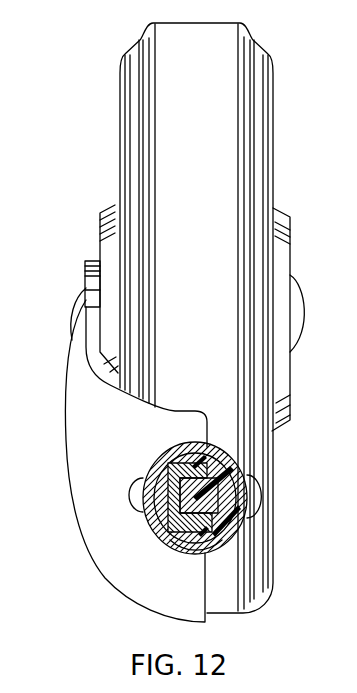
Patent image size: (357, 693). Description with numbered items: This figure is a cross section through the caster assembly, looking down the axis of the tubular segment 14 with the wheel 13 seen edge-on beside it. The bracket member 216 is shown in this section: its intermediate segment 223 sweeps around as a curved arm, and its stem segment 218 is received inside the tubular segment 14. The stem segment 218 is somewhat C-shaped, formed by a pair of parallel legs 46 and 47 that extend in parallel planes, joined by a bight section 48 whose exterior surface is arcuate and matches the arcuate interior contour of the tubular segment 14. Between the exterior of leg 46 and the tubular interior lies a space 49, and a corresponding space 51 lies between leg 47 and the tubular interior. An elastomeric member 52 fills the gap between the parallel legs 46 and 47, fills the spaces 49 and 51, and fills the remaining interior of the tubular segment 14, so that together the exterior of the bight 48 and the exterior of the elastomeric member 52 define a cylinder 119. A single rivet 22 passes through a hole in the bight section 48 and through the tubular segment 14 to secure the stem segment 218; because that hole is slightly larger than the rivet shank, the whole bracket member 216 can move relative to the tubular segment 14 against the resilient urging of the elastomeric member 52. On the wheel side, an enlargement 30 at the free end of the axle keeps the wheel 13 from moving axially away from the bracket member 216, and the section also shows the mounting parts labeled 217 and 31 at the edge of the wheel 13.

The wheel 13 is at (280, 146).
The tubular segment 14 is at (163, 454).
The rivet 22 is at (254, 498).
The enlargement 30 is at (298, 297).
The fork arm bulge 31 is at (79, 311).
The leg 46 is at (205, 452).
The leg 47 is at (205, 547).
The bight section 48 is at (158, 514).
The space 49 is at (172, 453).
The space 51 is at (192, 536).
The elastomeric member 52 is at (227, 484).
The cylinder 119 is at (237, 457).
The bracket member 216 is at (77, 533).
The mounting bracket 217 is at (80, 276).
The stem segment 218 is at (178, 541).
The intermediate segment 223 is at (88, 486).